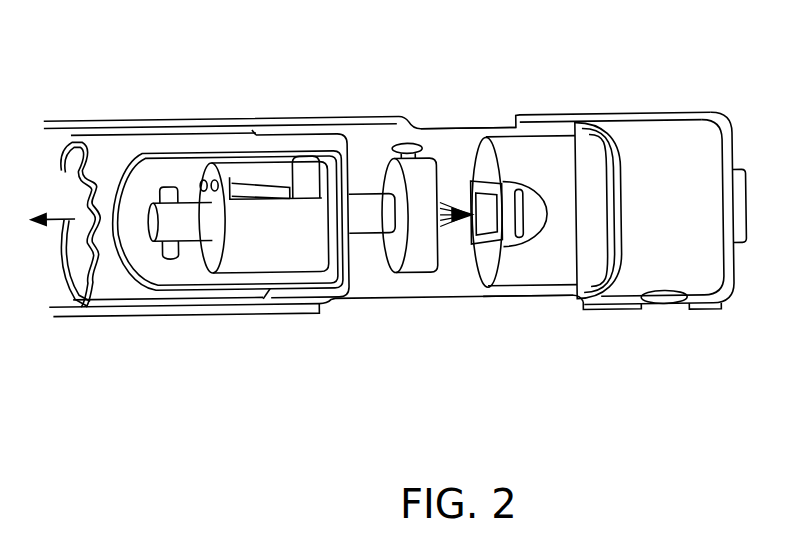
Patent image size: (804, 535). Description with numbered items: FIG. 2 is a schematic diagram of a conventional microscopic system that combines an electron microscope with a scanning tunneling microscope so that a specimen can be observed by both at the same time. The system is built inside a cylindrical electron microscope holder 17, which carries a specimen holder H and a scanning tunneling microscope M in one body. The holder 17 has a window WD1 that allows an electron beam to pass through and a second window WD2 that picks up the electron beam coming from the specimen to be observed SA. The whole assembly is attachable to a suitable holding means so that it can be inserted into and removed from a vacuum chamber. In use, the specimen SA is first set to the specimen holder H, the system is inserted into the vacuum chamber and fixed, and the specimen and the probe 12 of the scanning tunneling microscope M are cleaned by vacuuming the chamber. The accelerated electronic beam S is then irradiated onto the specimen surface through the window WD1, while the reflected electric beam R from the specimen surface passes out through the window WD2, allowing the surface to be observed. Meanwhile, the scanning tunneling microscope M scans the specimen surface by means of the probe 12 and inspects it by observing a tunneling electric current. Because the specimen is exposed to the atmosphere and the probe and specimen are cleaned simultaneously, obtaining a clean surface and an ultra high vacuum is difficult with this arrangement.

The cylindrical electron microscope holder 17 is at (229, 304).
The scanning tunneling microscope M is at (248, 300).
The probe 12 is at (448, 228).
The accelerated electronic beam S is at (473, 198).
The window WD1 is at (485, 129).
The specimen to be observed SA is at (502, 182).
The specimen holder H is at (543, 162).
The window WD2 is at (520, 300).
The reflected electric beam R is at (482, 139).